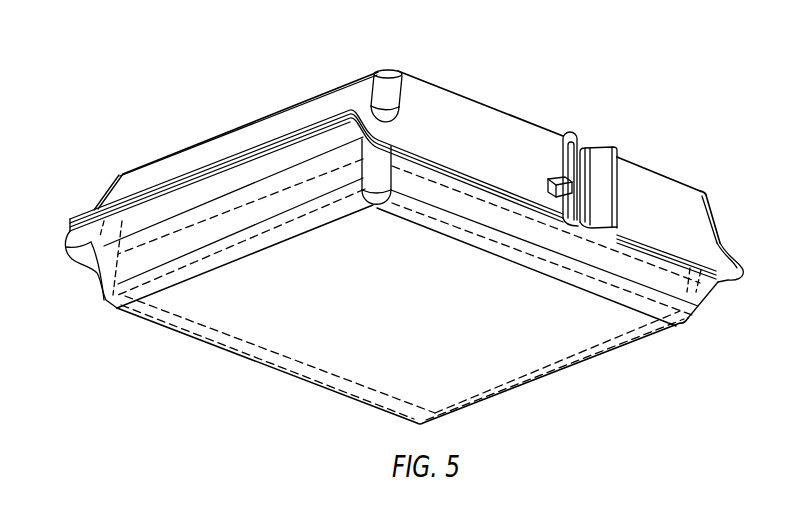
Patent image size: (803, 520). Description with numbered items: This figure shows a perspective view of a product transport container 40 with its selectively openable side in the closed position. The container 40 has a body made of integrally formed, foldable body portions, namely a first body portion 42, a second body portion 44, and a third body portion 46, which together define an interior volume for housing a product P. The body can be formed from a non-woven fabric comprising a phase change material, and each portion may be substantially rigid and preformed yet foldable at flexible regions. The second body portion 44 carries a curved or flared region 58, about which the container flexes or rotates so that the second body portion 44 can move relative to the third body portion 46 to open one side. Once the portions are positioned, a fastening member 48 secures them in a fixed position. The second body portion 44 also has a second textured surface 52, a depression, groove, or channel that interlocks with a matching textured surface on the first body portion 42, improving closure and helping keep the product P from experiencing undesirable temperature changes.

The product transport container 40 is at (150, 114).
The first body portion 42 is at (452, 123).
The second body portion 44 is at (679, 205).
The third body portion 46 is at (140, 306).
The fastening member 48 is at (557, 158).
The second textured surface 52 is at (580, 238).
The flared region 58 is at (92, 210).
The product P is at (633, 273).